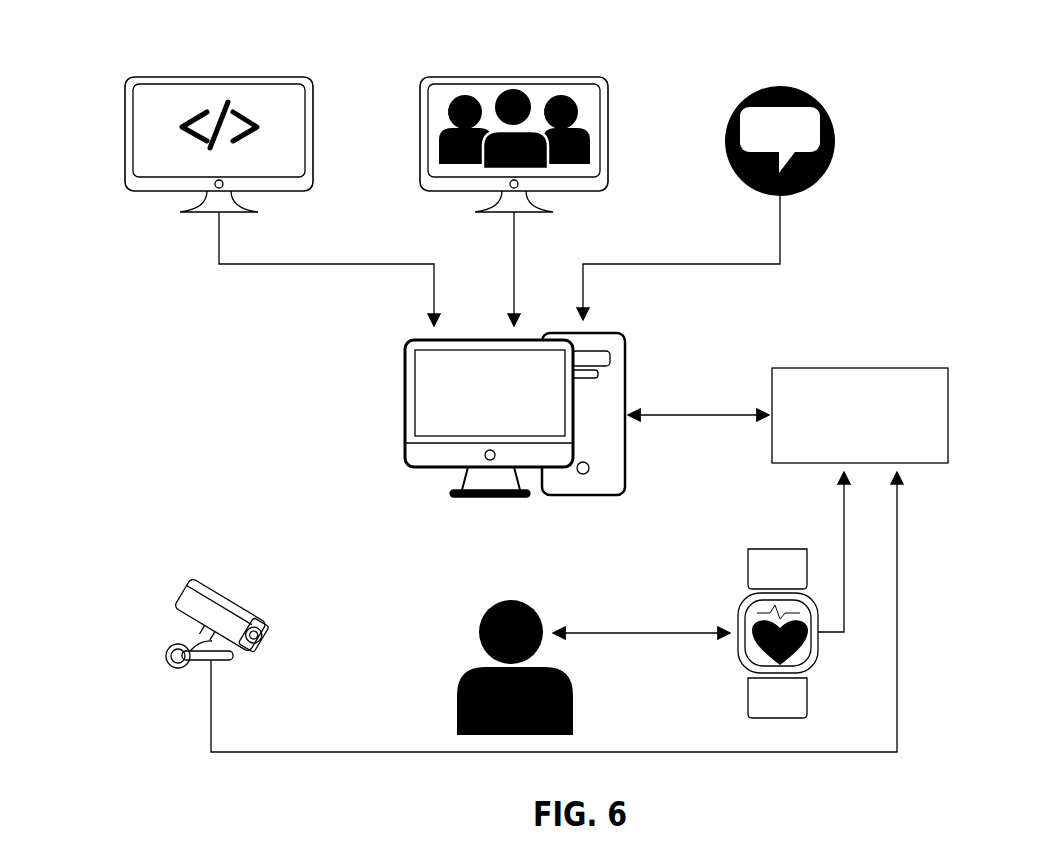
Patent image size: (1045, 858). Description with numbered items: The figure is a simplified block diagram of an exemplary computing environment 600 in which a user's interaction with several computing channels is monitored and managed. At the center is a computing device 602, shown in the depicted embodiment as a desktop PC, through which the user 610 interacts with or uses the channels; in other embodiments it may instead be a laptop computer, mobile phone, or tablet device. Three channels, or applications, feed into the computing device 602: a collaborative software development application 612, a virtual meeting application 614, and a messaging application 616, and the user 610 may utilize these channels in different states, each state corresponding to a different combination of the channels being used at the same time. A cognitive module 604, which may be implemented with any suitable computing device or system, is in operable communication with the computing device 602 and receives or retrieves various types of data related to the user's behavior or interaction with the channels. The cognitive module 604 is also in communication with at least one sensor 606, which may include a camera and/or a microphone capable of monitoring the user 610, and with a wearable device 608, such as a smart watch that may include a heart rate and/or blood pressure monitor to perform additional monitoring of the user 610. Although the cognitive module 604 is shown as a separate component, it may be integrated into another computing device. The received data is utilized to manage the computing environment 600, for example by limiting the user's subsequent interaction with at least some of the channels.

The computing environment 600 is at (65, 53).
The computing device 602 is at (604, 333).
The cognitive module 604 is at (923, 368).
The sensor 606 is at (248, 605).
The wearable device 608 is at (784, 549).
The user 610 is at (520, 600).
The software development application 612 is at (288, 77).
The virtual meeting application 614 is at (583, 77).
The messaging application 616 is at (808, 92).